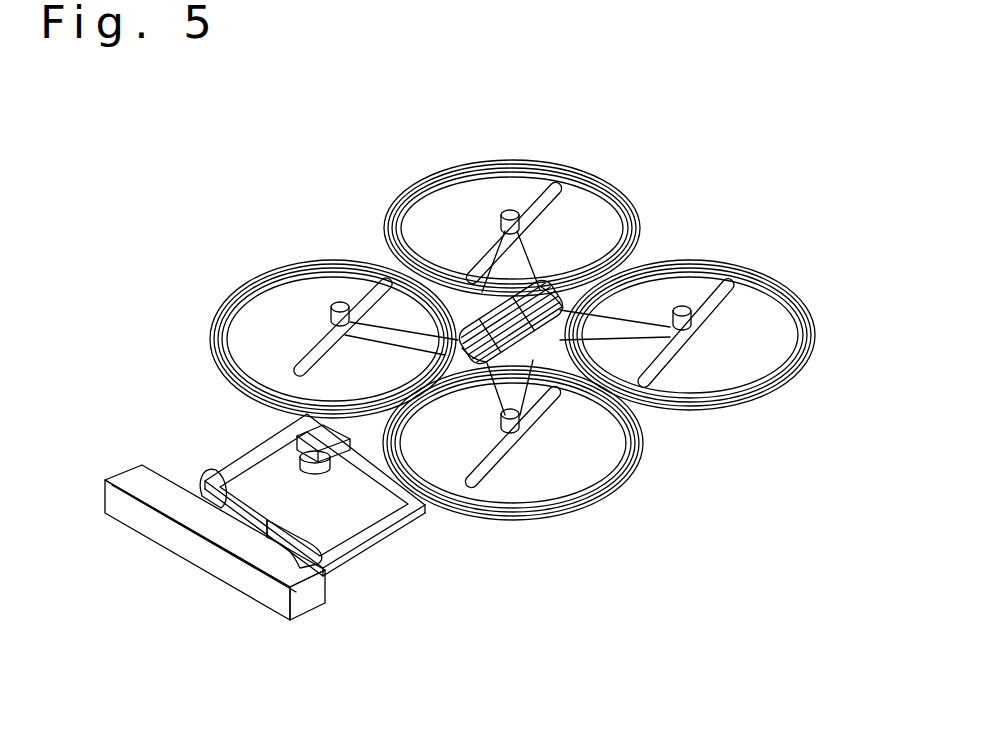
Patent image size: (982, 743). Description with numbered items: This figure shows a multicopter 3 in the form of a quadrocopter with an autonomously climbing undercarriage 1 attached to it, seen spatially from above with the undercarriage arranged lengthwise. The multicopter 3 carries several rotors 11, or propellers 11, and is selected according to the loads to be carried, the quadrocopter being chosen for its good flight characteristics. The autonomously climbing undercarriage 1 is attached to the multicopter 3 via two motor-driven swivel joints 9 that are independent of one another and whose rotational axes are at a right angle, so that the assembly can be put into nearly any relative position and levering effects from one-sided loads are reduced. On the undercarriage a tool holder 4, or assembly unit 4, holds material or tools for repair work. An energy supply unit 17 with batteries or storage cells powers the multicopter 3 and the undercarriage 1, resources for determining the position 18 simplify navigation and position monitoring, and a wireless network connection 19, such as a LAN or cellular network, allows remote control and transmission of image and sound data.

The autonomously climbing undercarriage 1 is at (430, 596).
The multicopter 3 is at (778, 223).
The tool holder 4 is at (183, 537).
The swivel joint 9 is at (345, 428).
The rotor 11 is at (658, 377).
The energy supply unit 17 is at (541, 330).
The resources for determining the position 18 is at (470, 355).
The wireless network connection 19 is at (562, 307).